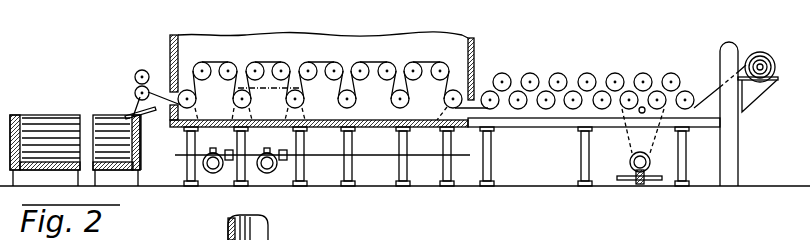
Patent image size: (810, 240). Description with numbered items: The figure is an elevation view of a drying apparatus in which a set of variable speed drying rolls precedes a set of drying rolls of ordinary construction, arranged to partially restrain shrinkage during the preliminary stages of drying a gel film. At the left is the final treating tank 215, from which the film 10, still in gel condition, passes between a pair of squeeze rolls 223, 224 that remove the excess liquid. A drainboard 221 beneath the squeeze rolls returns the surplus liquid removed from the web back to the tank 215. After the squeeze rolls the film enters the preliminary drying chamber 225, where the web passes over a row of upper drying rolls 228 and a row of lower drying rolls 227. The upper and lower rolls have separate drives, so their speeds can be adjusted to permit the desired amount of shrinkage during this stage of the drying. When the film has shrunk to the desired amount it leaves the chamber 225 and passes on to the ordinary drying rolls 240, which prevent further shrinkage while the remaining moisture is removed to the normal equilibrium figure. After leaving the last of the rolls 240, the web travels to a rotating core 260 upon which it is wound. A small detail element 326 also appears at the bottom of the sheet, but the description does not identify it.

The film 10 is at (108, 132).
The final treating tank 215 is at (25, 115).
The drainboard 221 is at (143, 117).
The squeeze roll 223 is at (149, 72).
The squeeze roll 224 is at (136, 89).
The preliminary drying chamber 225 is at (178, 48).
The lower drying rolls 227 is at (350, 108).
The upper drying rolls 228 is at (336, 62).
The ordinary drying rolls 240 is at (593, 74).
The rotating core 260 is at (783, 42).
The roller detail 326 is at (270, 236).